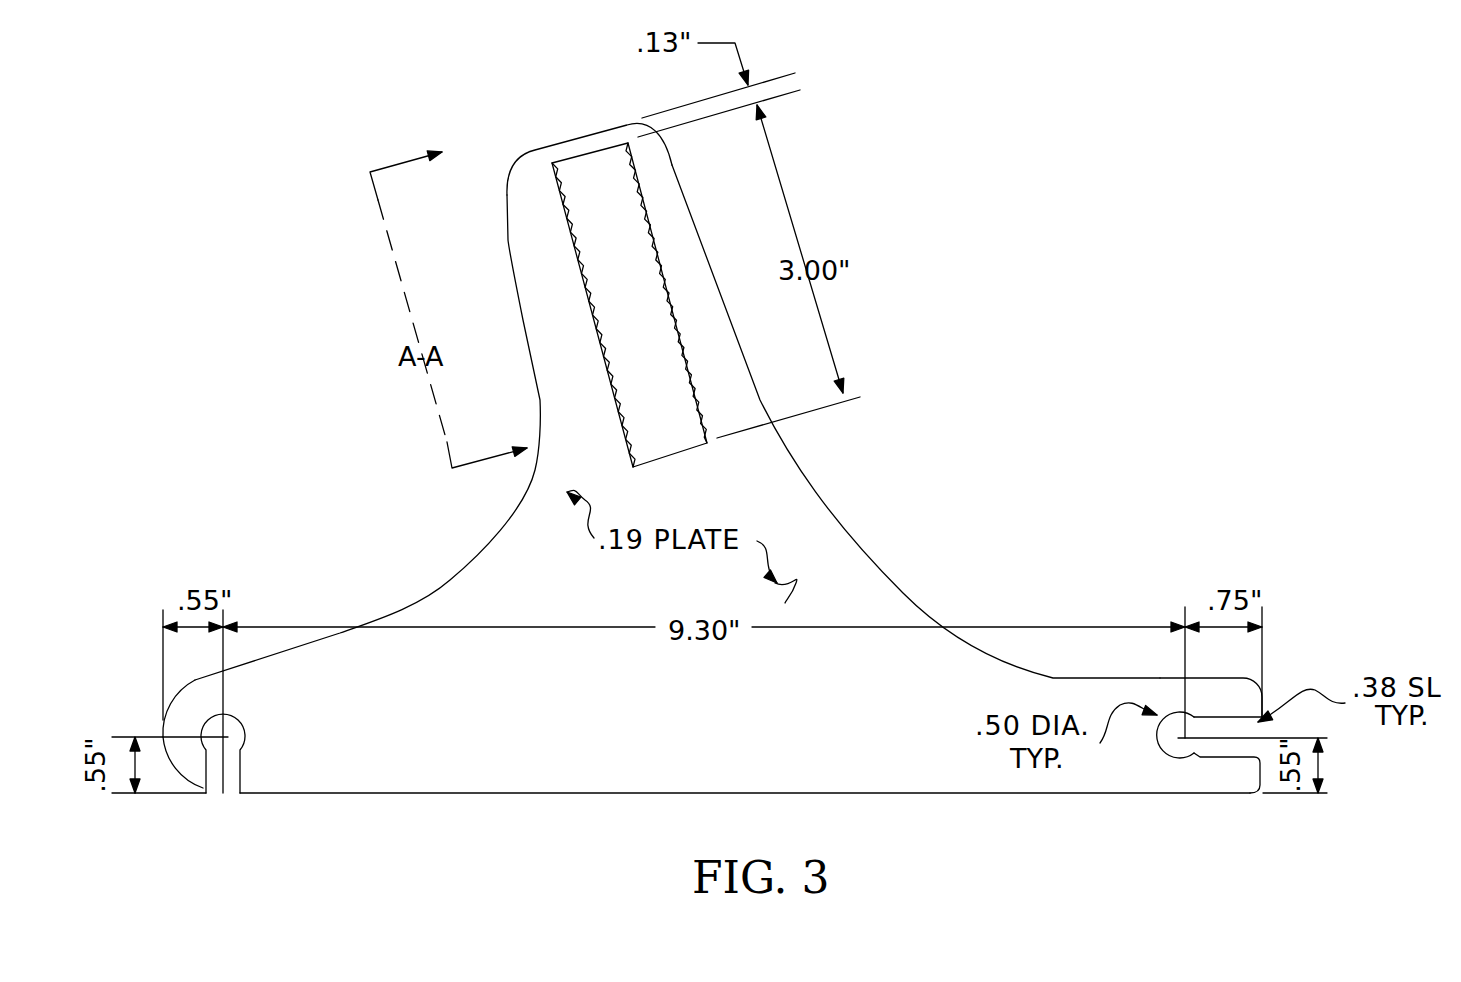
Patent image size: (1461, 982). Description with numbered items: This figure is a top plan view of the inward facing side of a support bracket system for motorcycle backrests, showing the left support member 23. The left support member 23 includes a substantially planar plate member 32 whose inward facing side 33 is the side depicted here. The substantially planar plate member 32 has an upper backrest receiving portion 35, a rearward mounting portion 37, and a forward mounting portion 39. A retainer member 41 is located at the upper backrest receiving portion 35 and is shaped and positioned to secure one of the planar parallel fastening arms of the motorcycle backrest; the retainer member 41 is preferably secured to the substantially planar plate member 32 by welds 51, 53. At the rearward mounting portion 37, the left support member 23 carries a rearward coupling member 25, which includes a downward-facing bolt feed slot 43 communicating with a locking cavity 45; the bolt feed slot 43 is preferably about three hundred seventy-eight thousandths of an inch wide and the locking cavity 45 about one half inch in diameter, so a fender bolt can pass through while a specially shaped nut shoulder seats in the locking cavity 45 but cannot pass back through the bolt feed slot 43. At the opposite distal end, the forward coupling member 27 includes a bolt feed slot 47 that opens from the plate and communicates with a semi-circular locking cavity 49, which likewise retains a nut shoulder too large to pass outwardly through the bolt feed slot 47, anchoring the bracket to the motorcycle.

The left support member 23 is at (900, 520).
The rearward coupling member 25 is at (160, 627).
The forward coupling member 27 is at (1312, 545).
The substantially planar plate member 32 is at (817, 490).
The inward facing side 33 is at (857, 590).
The upper backrest receiving portion 35 is at (665, 198).
The rearward mounting portion 37 is at (208, 693).
The forward mounting portion 39 is at (1243, 700).
The retainer member 41 is at (590, 167).
The bolt feed slot 43 is at (212, 790).
The locking cavity 45 is at (212, 727).
The bolt feed slot 47 is at (1238, 756).
The locking cavity 49 is at (1182, 753).
The weld 51 is at (577, 268).
The weld 53 is at (667, 288).